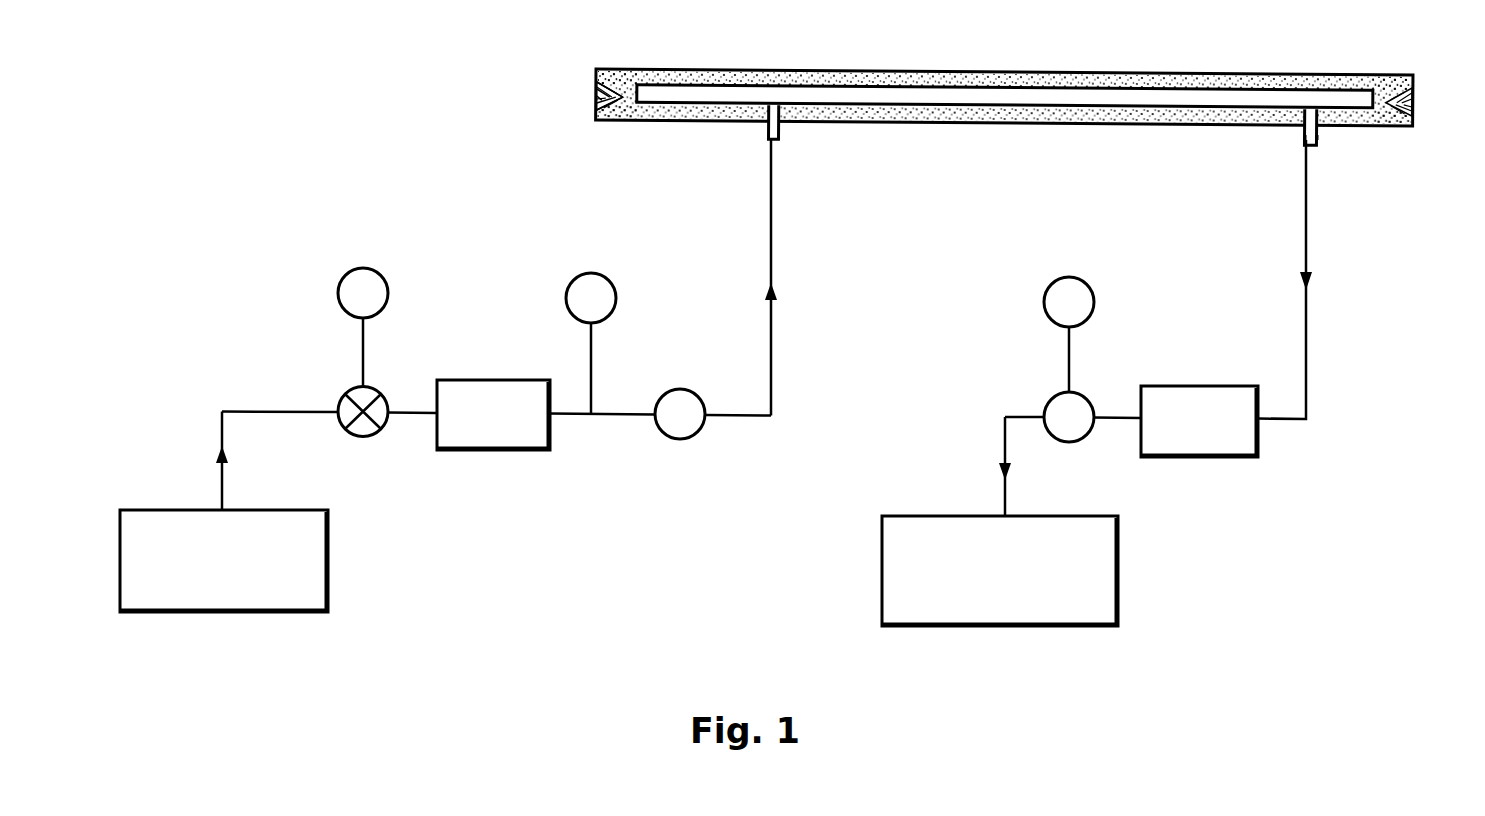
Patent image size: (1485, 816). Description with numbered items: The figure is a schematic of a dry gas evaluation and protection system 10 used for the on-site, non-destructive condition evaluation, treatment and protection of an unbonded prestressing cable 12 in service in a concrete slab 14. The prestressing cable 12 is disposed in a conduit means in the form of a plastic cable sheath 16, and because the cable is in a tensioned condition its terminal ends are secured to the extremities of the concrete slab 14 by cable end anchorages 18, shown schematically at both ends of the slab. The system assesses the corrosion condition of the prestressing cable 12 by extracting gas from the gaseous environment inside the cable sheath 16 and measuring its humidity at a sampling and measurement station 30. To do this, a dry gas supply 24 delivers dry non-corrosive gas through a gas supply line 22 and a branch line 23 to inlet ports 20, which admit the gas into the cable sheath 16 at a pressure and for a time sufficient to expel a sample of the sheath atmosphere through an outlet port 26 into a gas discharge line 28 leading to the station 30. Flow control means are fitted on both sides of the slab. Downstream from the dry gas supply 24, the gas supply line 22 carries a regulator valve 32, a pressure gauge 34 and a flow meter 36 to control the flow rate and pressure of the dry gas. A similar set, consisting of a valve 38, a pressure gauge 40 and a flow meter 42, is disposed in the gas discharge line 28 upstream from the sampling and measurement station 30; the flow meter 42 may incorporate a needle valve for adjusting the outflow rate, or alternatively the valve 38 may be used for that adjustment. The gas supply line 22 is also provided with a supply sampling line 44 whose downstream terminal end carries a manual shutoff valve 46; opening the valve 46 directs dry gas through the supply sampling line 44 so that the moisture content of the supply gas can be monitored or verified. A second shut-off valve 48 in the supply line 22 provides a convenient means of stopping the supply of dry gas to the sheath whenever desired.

The dry gas evaluation and protection system 10 is at (426, 115).
The prestressing cable 12 is at (635, 121).
The concrete slab 14 is at (636, 70).
The cable sheath 16 is at (1005, 85).
The cable end anchorages 18 is at (596, 100).
The inlet ports 20 is at (802, 141).
The gas supply line 22 is at (750, 418).
The branch line 23 is at (772, 228).
The dry gas supply 24 is at (330, 570).
The outlet port 26 is at (1318, 141).
The gas discharge line 28 is at (1307, 343).
The sampling and measurement station 30 is at (1120, 586).
The regulator valve 32 is at (363, 437).
The pressure gauge 34 is at (380, 270).
The flow meter 36 is at (530, 452).
The valve 38 is at (1075, 443).
The pressure gauge 40 is at (1082, 278).
The flow meter 42 is at (1230, 458).
The supply sampling line 44 is at (593, 345).
The manual shutoff valve 46 is at (598, 273).
The second shut-off valve 48 is at (683, 439).